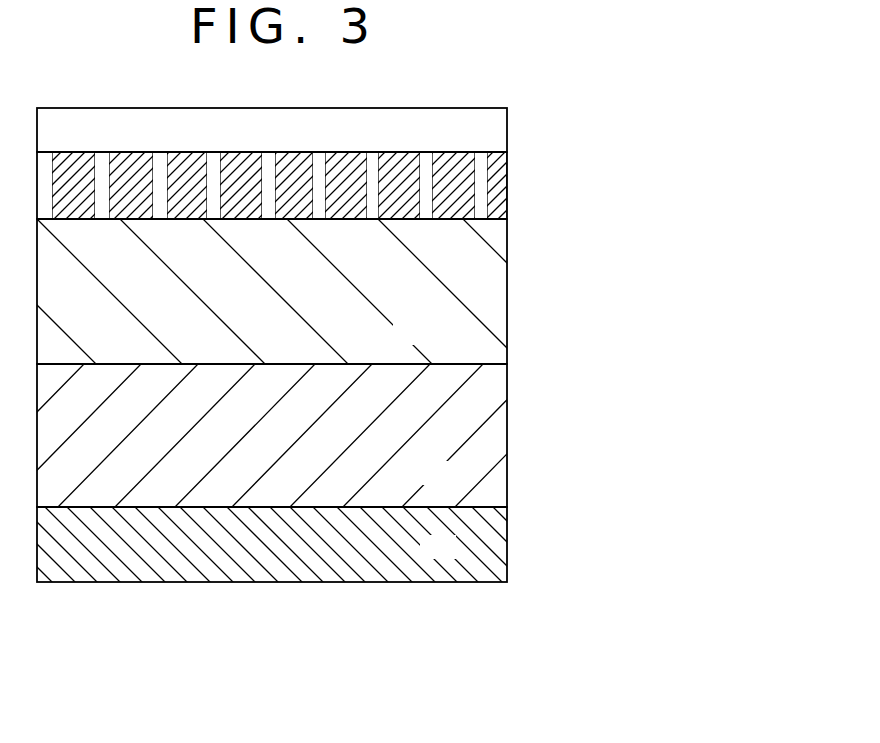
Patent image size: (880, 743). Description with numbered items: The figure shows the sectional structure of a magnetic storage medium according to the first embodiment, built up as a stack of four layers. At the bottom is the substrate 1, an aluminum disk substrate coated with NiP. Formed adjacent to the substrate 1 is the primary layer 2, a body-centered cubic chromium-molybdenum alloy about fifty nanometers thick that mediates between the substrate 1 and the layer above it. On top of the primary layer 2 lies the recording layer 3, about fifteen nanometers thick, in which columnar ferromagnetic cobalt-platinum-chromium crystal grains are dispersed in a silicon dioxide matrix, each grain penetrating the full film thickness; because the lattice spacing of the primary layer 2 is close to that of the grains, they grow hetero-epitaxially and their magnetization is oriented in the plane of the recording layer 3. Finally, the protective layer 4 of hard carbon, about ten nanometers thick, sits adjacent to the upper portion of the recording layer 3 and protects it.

The substrate 1 is at (746, 375).
The primary layer 2 is at (749, 230).
The recording layer 3 is at (389, 190).
The protective layer 4 is at (747, 103).